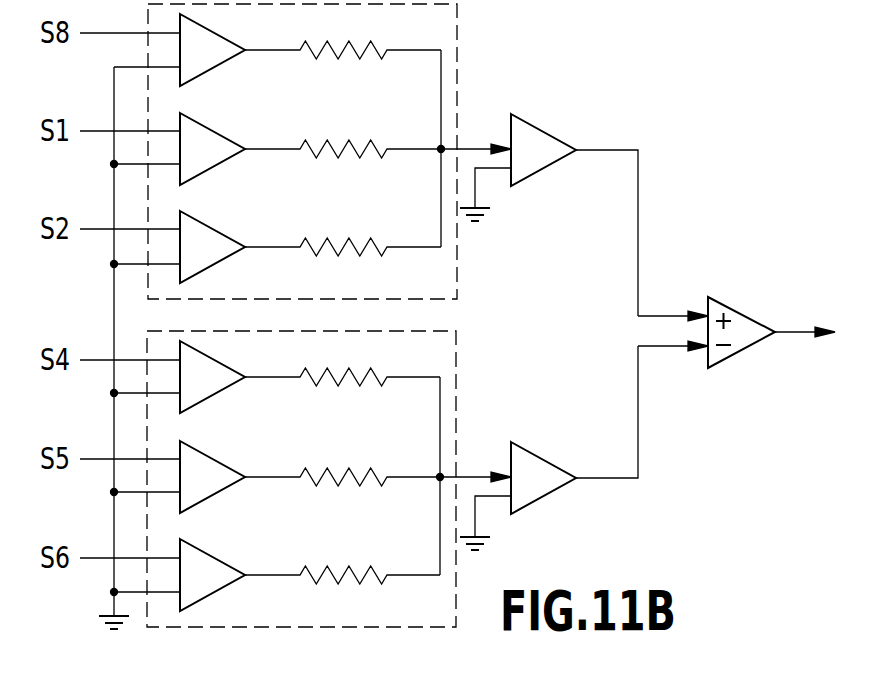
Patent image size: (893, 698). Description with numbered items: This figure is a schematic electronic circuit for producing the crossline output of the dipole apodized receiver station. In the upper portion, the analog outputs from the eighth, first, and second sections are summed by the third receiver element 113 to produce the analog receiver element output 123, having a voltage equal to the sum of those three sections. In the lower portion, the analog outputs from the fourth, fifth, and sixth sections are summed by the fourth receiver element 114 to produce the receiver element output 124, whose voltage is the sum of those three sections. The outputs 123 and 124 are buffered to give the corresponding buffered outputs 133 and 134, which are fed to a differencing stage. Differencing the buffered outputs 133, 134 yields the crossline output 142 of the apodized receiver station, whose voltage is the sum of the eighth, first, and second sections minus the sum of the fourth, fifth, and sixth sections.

The third receiver element 113 is at (457, 50).
The fourth receiver element 114 is at (457, 376).
The receiver element output 123 is at (463, 148).
The receiver element output 124 is at (463, 477).
The buffered output 133 is at (663, 316).
The buffered output 134 is at (660, 347).
The crossline output 142 is at (790, 331).